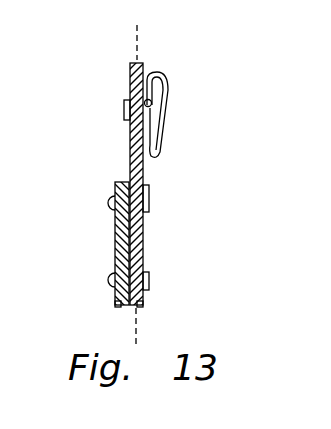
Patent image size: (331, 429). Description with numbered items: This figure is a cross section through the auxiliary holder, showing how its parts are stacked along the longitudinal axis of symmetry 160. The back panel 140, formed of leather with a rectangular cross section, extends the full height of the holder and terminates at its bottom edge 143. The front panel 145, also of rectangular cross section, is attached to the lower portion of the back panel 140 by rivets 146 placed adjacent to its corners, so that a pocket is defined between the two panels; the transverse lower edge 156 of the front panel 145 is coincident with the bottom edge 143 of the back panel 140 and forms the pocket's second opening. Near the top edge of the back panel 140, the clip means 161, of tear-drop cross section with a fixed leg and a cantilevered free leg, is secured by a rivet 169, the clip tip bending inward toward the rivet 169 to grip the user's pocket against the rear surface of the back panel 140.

The back panel 140 is at (178, 187).
The bottom edge 143 is at (140, 308).
The front panel 145 is at (115, 239).
The rivets 146 is at (108, 200).
The transverse lower edge 156 is at (127, 308).
The longitudinal axis of symmetry 160 is at (140, 43).
The clip means 161 is at (168, 117).
The rivet 169 is at (126, 103).